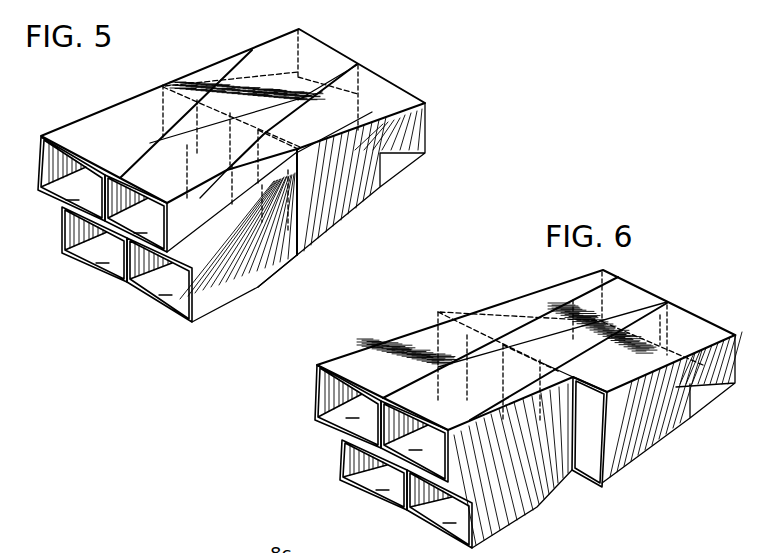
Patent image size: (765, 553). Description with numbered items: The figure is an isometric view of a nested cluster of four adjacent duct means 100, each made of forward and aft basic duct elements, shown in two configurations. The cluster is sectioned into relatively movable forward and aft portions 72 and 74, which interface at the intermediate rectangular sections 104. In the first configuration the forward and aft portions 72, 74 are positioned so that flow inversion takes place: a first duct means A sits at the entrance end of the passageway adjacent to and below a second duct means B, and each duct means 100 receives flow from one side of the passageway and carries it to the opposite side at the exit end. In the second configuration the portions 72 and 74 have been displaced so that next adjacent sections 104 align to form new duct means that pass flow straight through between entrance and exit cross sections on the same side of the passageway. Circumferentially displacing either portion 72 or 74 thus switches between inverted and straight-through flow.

In FIG. 5, the forward portion 72 is at (160, 66).
In FIG. 6, the forward portion 72 is at (433, 303).
In FIG. 5, the aft portion 74 is at (293, 22).
In FIG. 6, the aft portion 74 is at (600, 265).
In FIG. 5, the duct 100 is at (334, 50).
In FIG. 6, the duct 100 is at (641, 290).
In FIG. 5, the intermediate rectangular sections 104 is at (294, 255).
In FIG. 6, the intermediate rectangular sections 104 is at (601, 486).